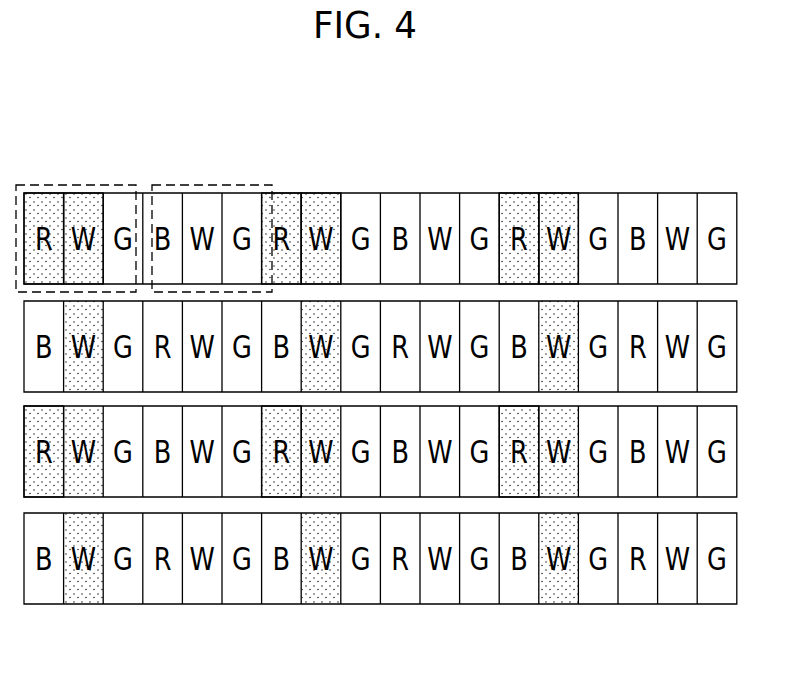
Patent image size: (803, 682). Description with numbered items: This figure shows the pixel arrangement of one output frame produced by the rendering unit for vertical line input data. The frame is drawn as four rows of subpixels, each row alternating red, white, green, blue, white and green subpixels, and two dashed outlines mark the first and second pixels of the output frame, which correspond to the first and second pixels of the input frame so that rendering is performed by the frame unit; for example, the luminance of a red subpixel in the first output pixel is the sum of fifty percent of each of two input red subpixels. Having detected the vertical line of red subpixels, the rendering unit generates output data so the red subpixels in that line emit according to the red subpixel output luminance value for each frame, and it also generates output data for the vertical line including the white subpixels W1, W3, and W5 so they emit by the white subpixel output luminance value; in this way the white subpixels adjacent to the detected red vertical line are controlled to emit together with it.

The white subpixel W1 is at (83, 200).
The white subpixel W3 is at (329, 200).
The white subpixel W5 is at (558, 200).